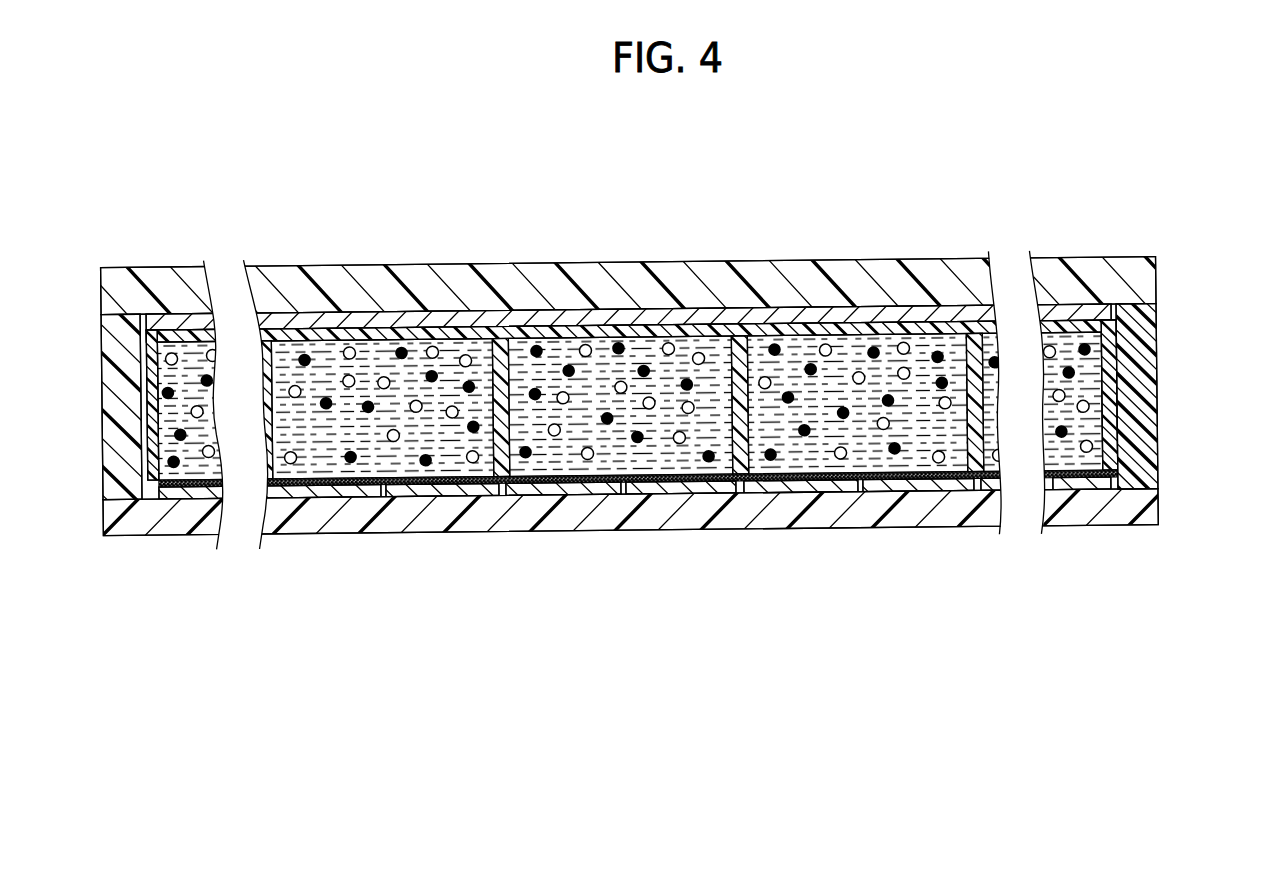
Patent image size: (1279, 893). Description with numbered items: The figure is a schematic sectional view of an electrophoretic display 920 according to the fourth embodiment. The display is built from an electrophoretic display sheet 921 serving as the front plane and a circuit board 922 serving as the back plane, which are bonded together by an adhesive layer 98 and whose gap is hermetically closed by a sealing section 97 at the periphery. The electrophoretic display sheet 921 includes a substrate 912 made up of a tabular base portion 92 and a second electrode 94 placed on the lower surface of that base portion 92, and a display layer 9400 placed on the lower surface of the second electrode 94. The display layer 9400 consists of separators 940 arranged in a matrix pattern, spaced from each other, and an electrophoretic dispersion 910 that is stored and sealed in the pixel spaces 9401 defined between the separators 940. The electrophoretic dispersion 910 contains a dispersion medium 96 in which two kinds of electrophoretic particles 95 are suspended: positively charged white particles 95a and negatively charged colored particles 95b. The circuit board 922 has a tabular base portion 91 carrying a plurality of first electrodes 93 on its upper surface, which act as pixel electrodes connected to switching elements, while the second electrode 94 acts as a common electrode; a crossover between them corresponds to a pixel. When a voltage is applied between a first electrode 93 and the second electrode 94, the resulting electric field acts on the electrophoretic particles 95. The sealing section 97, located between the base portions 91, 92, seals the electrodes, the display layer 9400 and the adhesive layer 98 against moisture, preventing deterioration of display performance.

The electrophoretic display 920 is at (650, 375).
The electrophoretic display sheet 921 is at (649, 378).
The circuit board 922 is at (680, 563).
The substrate 912 is at (614, 240).
The second electrode 94 is at (788, 194).
The base portion 92 is at (768, 284).
The electrophoretic dispersion 910 is at (634, 563).
The first electrodes 93 is at (636, 488).
The base portion 91 is at (690, 514).
The display layer 9400 is at (700, 395).
The separators 940 is at (521, 318).
The pixel spaces 9401 is at (375, 339).
The electrophoretic particles 95 is at (627, 472).
The white particles 95a is at (368, 411).
The colored particles 95b is at (328, 407).
The dispersion medium 96 is at (445, 448).
The sealing section 97 is at (134, 485).
The adhesive layer 98 is at (1083, 483).